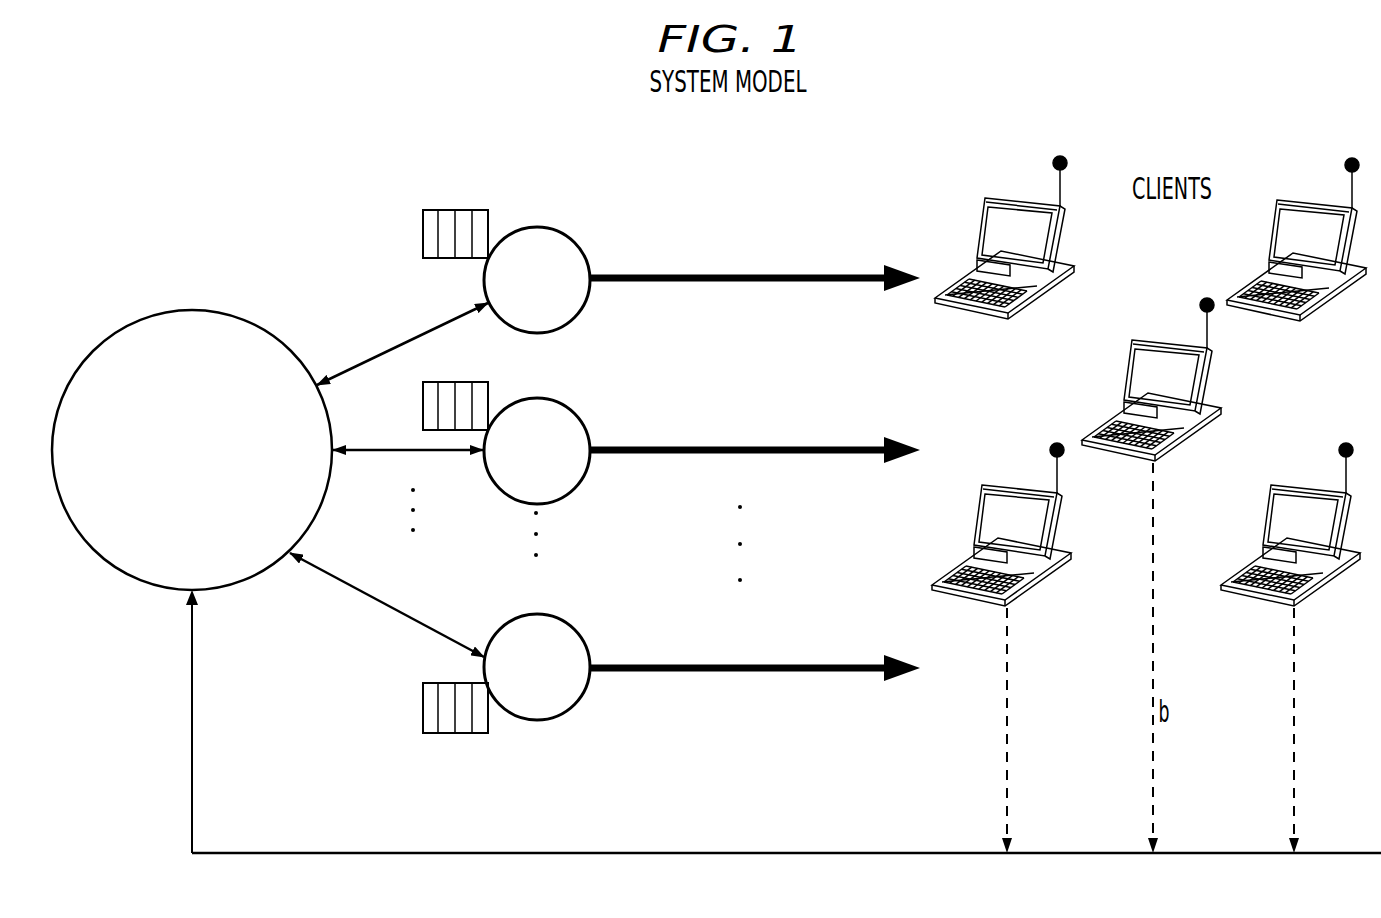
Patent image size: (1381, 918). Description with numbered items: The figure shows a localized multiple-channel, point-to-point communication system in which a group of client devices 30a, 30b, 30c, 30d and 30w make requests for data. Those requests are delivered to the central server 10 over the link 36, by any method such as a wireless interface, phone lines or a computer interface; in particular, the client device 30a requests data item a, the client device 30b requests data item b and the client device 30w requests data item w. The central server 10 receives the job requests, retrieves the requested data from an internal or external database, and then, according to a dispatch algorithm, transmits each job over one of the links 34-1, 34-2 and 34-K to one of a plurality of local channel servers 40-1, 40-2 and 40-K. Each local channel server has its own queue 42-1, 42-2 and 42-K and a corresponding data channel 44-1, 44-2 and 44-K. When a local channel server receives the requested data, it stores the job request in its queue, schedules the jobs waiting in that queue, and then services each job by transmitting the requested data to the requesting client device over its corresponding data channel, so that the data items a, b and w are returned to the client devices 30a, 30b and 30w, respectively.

The central server 10 is at (197, 307).
The link 34-1 is at (394, 349).
The link 34-2 is at (376, 447).
The link 34-K is at (409, 613).
The queue 42-1 is at (460, 209).
The queue 42-2 is at (460, 381).
The queue 42-K is at (421, 704).
The local channel server 40-1 is at (566, 292).
The local channel server 40-2 is at (566, 464).
The local channel server 40-K is at (509, 681).
The data channel 44-1 is at (844, 272).
The data channel 44-2 is at (844, 445).
The data channel 44-K is at (845, 662).
The client device 30a is at (1024, 487).
The client device 30b is at (1175, 342).
The client device 30c is at (1027, 200).
The client device 30d is at (1319, 202).
The client device 30w is at (1317, 489).
The link 36 is at (688, 851).